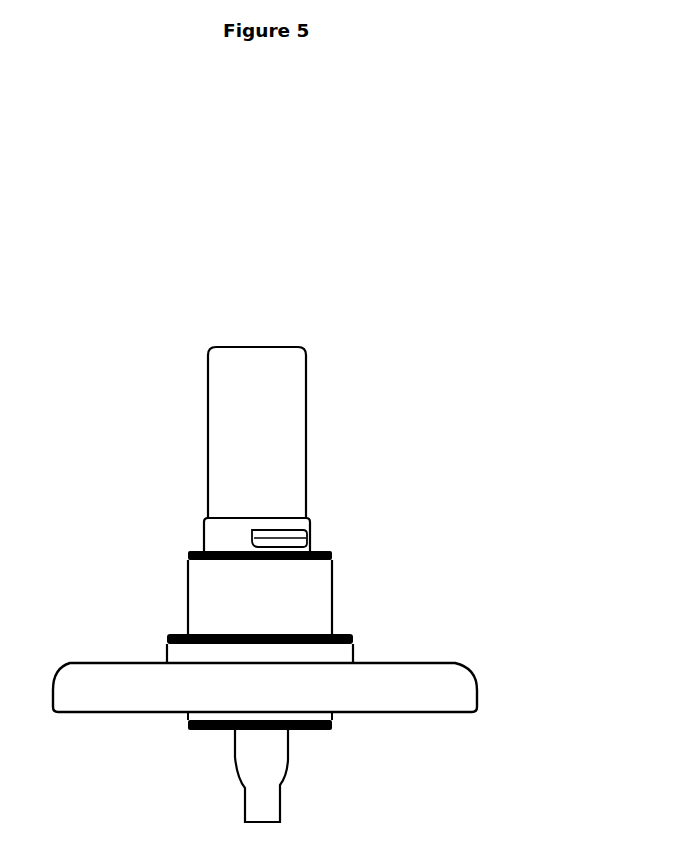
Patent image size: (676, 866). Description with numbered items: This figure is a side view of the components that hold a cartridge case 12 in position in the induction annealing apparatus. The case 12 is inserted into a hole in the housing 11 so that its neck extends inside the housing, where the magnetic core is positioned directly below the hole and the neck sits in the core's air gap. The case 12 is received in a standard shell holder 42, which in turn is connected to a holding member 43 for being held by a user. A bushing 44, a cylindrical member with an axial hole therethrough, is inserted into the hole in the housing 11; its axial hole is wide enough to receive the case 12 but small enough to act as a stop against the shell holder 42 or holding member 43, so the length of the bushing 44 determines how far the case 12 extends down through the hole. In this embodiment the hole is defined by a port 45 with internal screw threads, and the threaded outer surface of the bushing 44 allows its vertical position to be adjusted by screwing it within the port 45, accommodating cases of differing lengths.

The holding member 43 is at (282, 393).
The shell holder 42 is at (313, 527).
The bushing 44 is at (298, 588).
The port 45 is at (333, 650).
The housing 11 is at (423, 687).
The cartridge case 12 is at (255, 768).